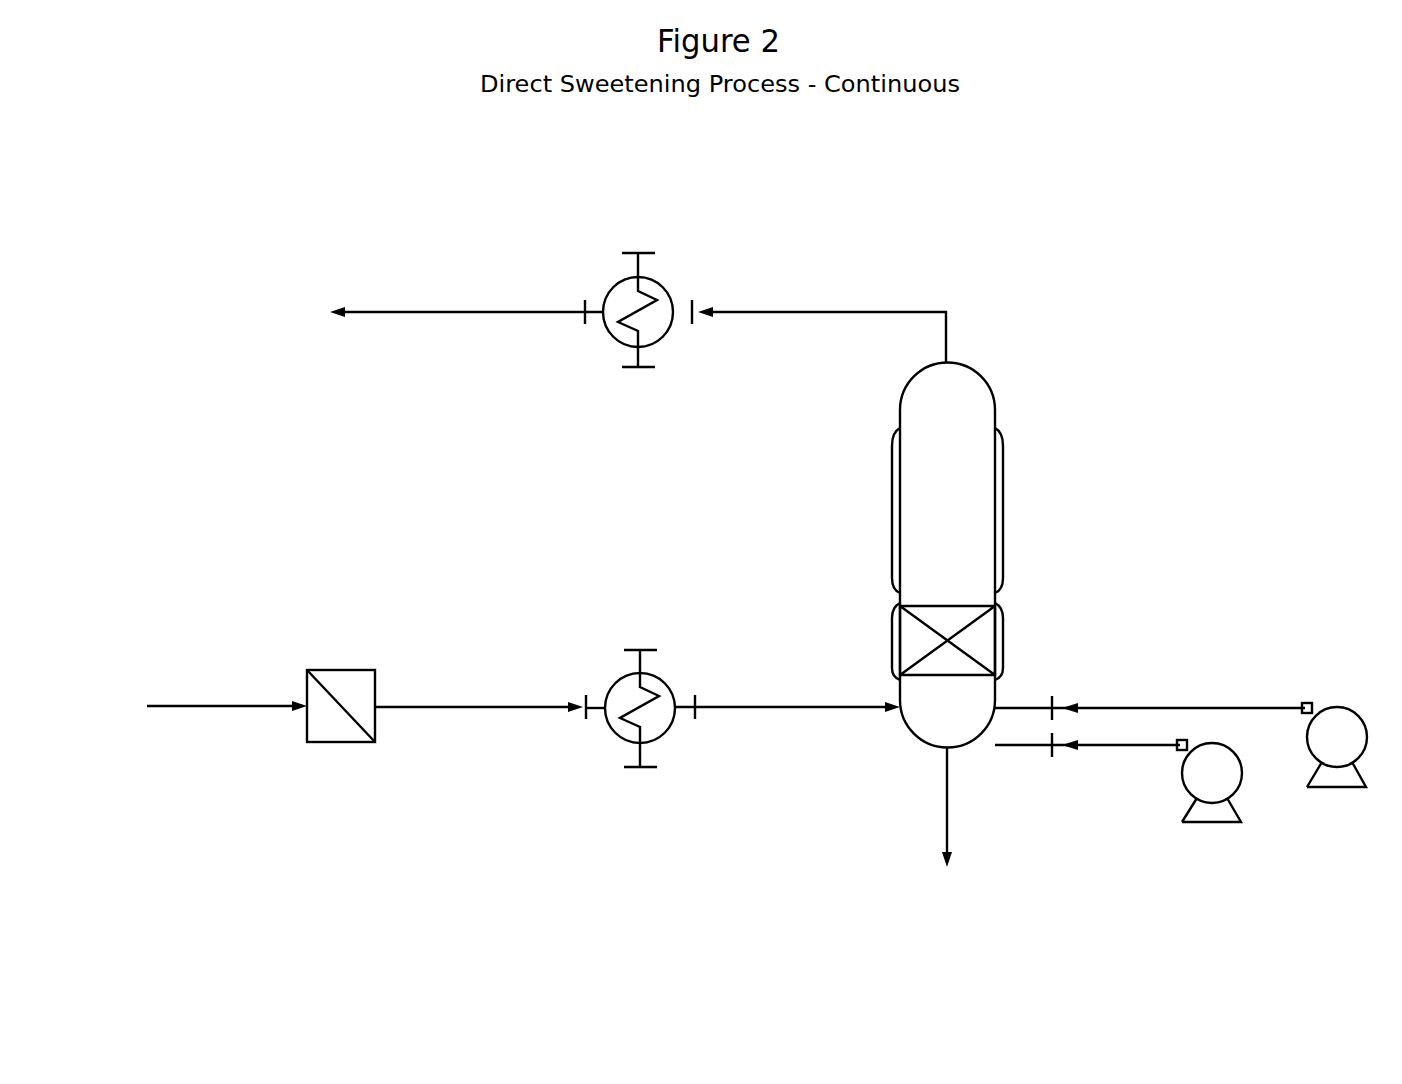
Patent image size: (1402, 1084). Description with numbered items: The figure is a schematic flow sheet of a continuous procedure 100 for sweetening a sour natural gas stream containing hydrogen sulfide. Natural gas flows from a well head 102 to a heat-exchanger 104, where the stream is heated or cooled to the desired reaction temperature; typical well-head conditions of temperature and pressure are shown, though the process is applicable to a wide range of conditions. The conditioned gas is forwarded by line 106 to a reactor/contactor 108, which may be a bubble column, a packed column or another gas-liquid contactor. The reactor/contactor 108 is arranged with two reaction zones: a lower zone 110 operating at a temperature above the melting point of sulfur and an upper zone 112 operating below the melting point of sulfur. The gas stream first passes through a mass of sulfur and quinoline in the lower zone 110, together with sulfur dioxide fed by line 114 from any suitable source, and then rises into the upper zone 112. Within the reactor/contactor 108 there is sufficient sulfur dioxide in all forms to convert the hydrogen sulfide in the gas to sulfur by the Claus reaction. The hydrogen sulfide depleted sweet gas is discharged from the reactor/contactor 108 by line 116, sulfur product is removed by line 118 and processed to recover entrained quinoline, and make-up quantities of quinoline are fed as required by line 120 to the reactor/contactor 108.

The procedure 100 is at (1252, 141).
The well head 102 is at (168, 704).
The heat-exchanger 104 is at (660, 680).
The line 106 is at (800, 708).
The reactor/contactor 108 is at (1006, 555).
The lower zone 110 is at (990, 637).
The upper zone 112 is at (915, 507).
The line 114 is at (1205, 708).
The line 116 is at (841, 312).
The line 118 is at (950, 815).
The line 120 is at (1126, 746).